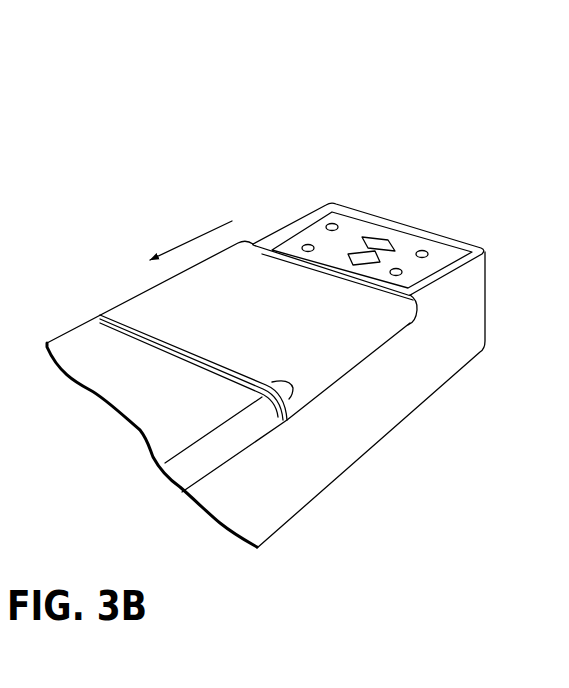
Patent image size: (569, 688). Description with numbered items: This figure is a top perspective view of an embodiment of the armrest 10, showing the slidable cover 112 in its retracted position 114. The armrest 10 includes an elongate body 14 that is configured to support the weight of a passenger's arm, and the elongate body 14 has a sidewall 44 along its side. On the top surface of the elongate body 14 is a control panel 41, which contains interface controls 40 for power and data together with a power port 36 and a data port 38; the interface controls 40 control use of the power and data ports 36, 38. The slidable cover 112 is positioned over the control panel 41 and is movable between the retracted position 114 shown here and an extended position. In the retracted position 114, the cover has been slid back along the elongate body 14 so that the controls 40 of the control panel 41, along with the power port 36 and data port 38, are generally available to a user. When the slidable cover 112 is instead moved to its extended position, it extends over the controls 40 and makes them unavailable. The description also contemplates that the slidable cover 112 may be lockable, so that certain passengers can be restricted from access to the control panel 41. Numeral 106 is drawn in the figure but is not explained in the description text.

The armrest 10 is at (359, 109).
The elongate body 14 is at (266, 400).
The power port 36 is at (330, 225).
The data port 38 is at (303, 244).
The interface controls 40 is at (352, 252).
The control panel 41 is at (486, 224).
The sidewall 44 is at (281, 475).
The recessed surface 106 is at (414, 246).
The slidable cover 112 is at (150, 303).
The retracted position 114 is at (358, 181).